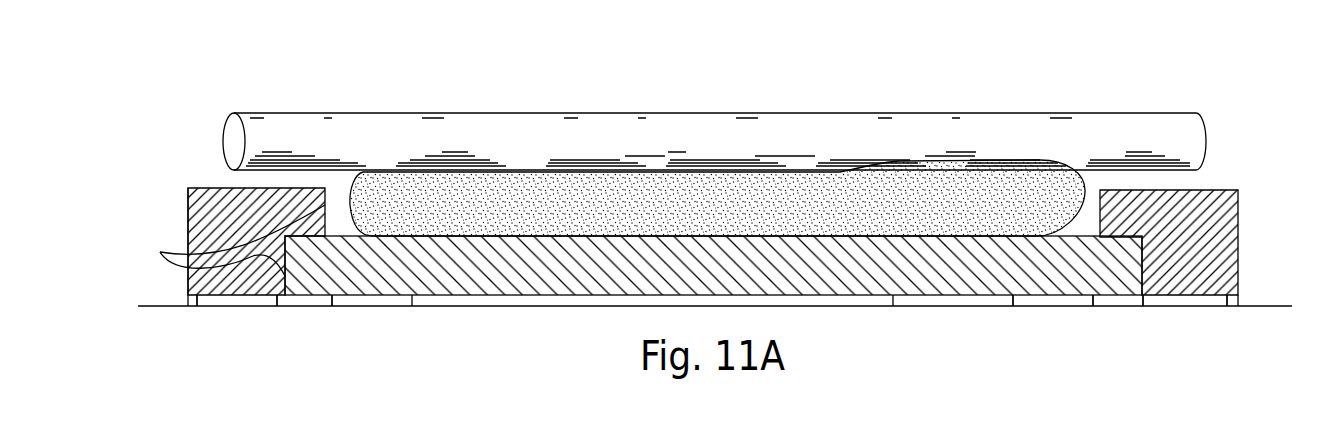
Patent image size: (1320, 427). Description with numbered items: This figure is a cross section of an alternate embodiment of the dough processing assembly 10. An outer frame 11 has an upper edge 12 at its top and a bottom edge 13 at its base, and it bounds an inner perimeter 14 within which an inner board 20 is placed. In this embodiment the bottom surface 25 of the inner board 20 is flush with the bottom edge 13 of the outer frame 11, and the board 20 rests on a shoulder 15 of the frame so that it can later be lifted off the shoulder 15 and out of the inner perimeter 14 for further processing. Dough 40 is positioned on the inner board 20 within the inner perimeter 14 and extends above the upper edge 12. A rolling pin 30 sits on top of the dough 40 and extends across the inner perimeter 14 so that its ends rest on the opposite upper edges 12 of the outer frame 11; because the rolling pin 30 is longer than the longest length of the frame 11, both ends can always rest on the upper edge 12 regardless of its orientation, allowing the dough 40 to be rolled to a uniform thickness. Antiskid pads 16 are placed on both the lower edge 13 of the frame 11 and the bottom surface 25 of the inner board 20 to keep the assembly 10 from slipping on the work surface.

The dough processing assembly 10 is at (530, 334).
The outer frame 11 is at (187, 207).
The upper edge 12 is at (213, 188).
The bottom edge 13 is at (192, 306).
The inner perimeter 14 is at (229, 240).
The shoulder 15 is at (312, 237).
The antiskid pads 16 is at (232, 307).
The inner board 20 is at (1128, 255).
The bottom surface 25 is at (893, 298).
The rolling pin 30 is at (1027, 113).
The dough 40 is at (1080, 182).